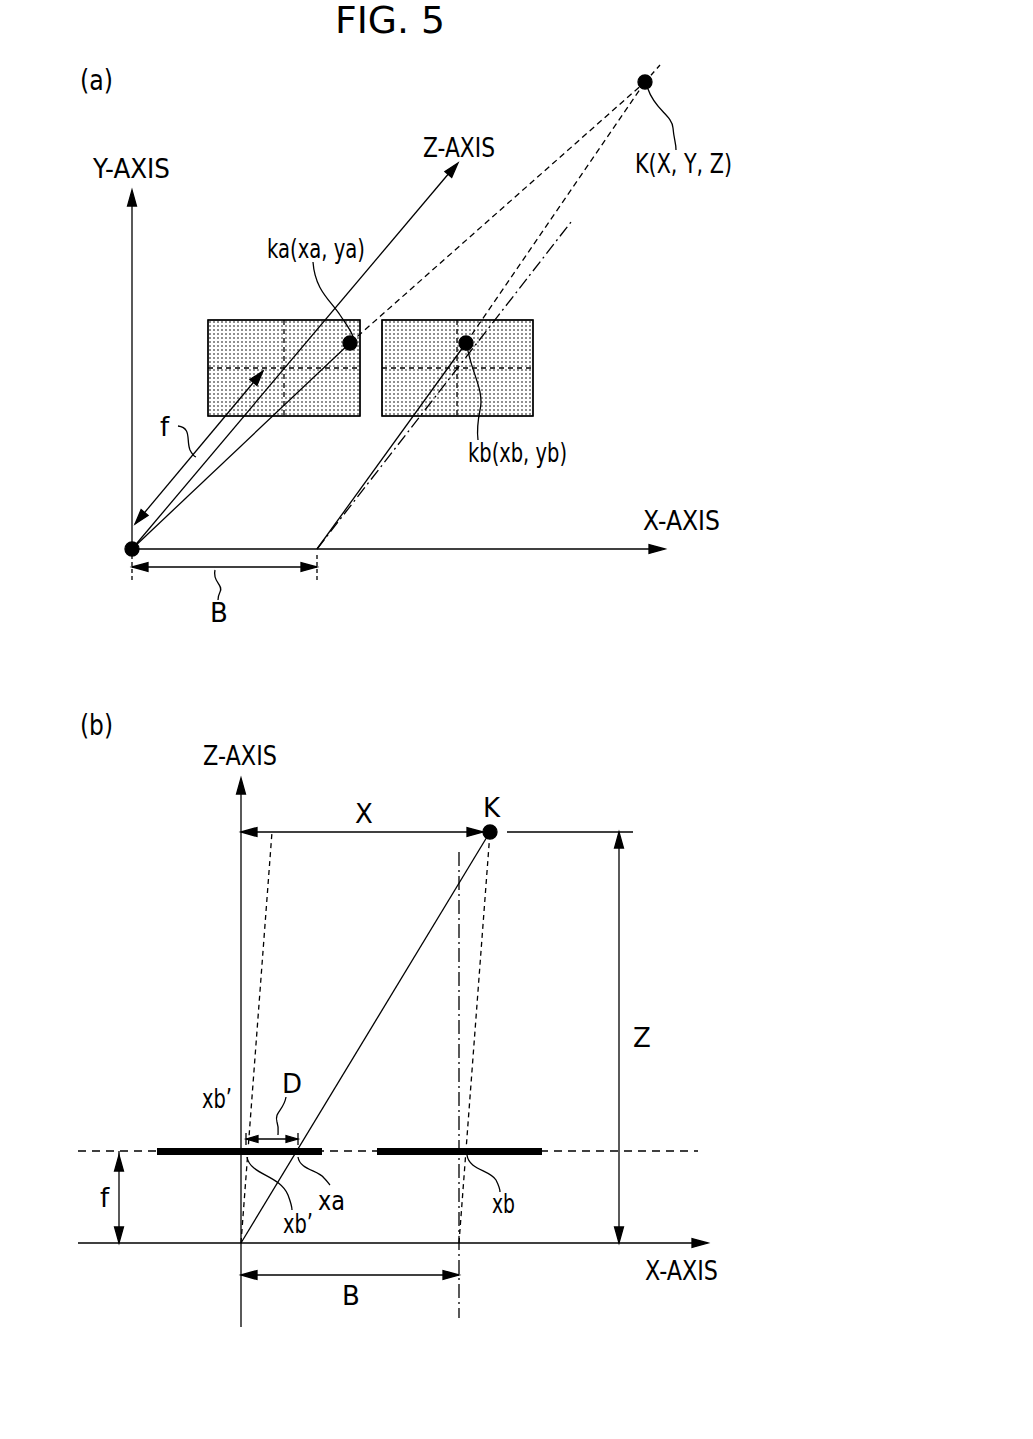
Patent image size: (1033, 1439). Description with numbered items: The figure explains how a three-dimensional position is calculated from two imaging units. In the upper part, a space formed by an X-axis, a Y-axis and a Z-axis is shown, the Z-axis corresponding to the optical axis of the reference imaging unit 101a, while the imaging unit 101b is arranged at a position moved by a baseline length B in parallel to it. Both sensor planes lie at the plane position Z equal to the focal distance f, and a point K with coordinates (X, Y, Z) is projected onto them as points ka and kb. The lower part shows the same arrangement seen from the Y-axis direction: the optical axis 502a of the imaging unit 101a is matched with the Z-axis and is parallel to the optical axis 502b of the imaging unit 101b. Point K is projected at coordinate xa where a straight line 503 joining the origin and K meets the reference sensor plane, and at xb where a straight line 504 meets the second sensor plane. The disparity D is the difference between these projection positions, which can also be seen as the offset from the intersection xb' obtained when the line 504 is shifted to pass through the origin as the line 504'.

The imaging unit 101a is at (207, 387).
The imaging unit 101b is at (533, 388).
The optical axis 502a is at (241, 895).
The optical axis 502b is at (459, 857).
The straight line 503 is at (377, 1030).
The straight line 504 is at (509, 1037).
The straight line 504' is at (294, 1037).